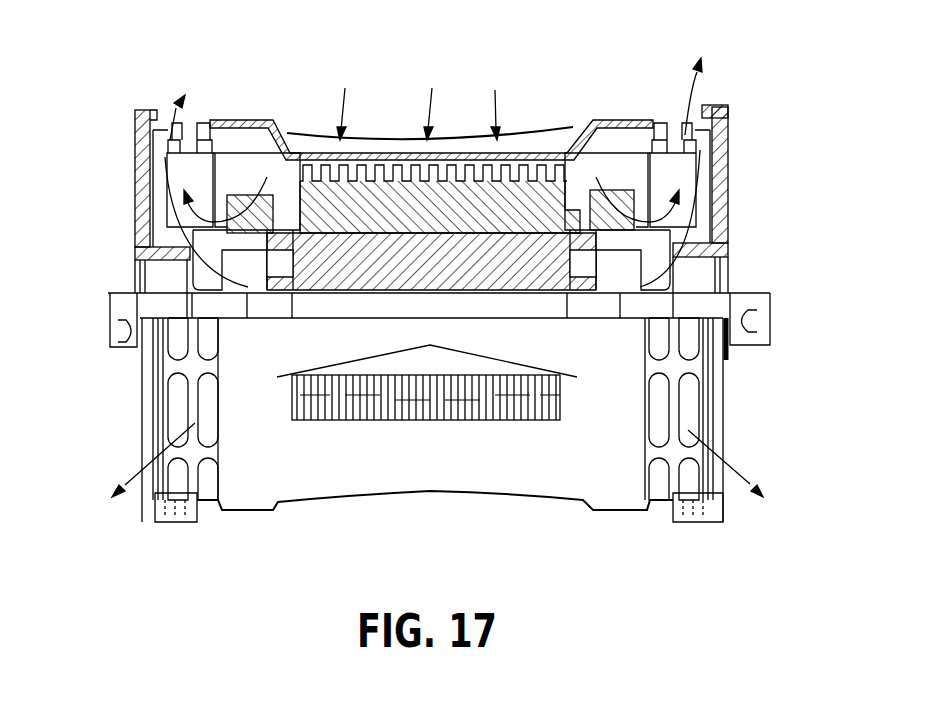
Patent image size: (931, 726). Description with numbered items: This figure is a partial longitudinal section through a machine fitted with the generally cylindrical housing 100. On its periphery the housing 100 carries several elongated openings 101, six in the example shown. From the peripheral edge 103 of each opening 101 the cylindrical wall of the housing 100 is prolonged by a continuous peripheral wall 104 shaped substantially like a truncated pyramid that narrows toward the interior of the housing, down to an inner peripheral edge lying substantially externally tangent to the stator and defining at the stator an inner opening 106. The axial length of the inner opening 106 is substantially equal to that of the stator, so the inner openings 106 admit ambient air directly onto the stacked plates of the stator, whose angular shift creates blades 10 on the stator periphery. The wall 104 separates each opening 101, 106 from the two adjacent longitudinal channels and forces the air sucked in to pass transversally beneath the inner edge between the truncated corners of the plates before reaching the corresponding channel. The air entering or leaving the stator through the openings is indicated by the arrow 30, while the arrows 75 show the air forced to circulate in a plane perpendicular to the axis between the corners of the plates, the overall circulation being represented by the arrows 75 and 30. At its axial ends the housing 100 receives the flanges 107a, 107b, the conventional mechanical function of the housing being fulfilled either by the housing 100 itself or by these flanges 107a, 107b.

The blades 10 is at (395, 512).
The arrow 30 is at (340, 128).
The arrows 75 is at (710, 88).
The housing 100 is at (252, 112).
The elongated openings 101 is at (386, 122).
The peripheral edge 103 is at (522, 497).
The continuous peripheral wall 104 is at (575, 122).
The inner opening 106 is at (533, 157).
The flange 107a is at (96, 150).
The flange 107b is at (733, 193).